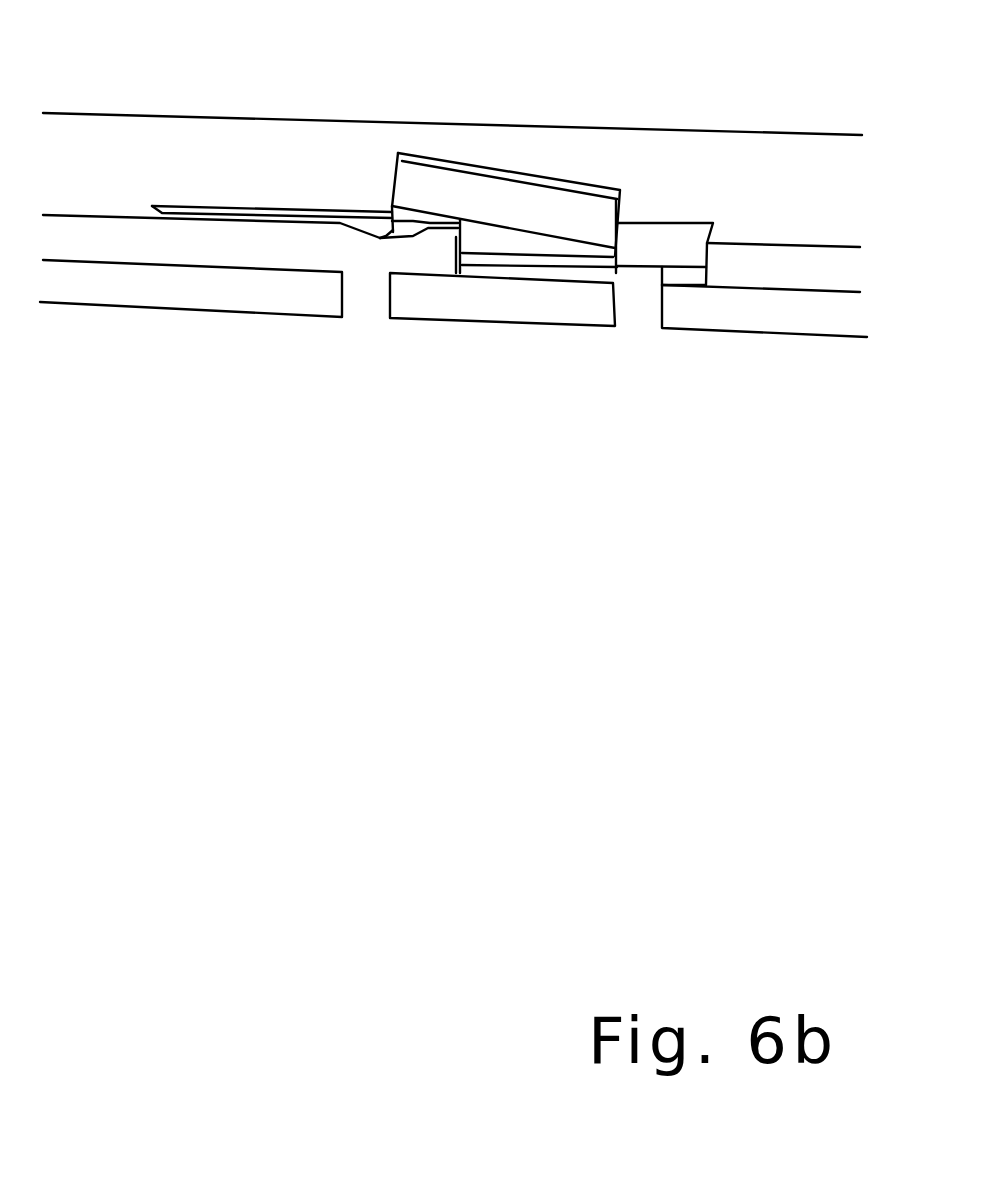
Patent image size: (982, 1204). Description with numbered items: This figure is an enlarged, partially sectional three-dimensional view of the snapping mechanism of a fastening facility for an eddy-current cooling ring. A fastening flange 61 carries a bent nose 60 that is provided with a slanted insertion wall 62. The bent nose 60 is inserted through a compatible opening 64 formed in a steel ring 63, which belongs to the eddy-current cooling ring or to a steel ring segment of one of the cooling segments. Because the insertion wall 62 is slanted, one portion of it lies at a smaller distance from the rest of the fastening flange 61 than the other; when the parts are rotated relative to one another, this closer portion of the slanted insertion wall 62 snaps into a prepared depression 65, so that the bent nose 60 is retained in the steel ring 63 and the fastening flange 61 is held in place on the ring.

The bent nose 60 is at (543, 168).
The fastening flange 61 is at (225, 328).
The slanted insertion wall 62 is at (445, 200).
The steel ring 63 is at (758, 205).
The compatible opening 64 is at (638, 325).
The prepared depression 65 is at (387, 237).